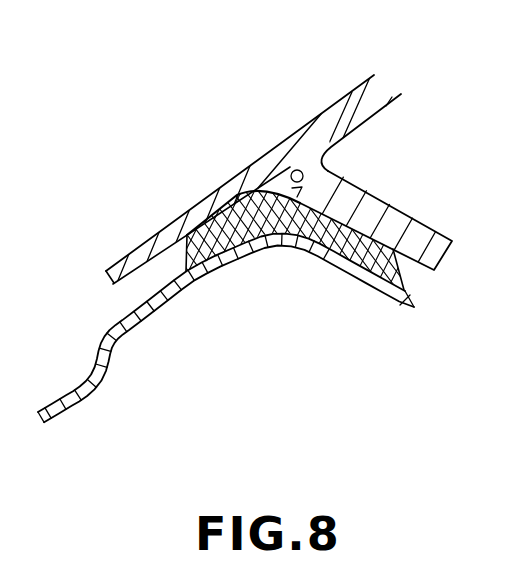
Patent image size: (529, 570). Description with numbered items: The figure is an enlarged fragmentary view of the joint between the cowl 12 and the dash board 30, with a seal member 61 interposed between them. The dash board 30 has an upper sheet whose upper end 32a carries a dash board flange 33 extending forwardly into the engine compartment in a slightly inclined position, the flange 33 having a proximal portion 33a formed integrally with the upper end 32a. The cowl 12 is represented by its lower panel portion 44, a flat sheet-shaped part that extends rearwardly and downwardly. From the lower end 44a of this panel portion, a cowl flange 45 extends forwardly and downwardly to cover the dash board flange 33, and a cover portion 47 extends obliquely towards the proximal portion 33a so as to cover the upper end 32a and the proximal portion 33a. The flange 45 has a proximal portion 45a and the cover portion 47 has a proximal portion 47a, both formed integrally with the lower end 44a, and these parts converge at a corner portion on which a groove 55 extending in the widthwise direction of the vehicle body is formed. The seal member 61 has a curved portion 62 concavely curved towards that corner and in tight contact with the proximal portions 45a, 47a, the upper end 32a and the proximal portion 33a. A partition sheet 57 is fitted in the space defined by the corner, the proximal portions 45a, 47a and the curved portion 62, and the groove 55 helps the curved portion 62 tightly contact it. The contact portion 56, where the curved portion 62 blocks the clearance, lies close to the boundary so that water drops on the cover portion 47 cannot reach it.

The cowl 12 is at (435, 74).
The dash board 30 is at (112, 393).
The upper end 32a is at (217, 263).
The dash board flange 33 is at (403, 305).
The proximal portion 33a is at (305, 255).
The lower panel portion 44 is at (374, 90).
The lower end 44a is at (316, 160).
The cowl flange 45 is at (418, 230).
The proximal portion 45a is at (335, 187).
The cover portion 47 is at (137, 258).
The proximal portion 47a is at (263, 157).
The groove 55 is at (312, 198).
The contact portion 56 is at (282, 158).
The partition sheet 57 is at (289, 250).
The seal member 61 is at (281, 324).
The curved portion 62 is at (349, 263).